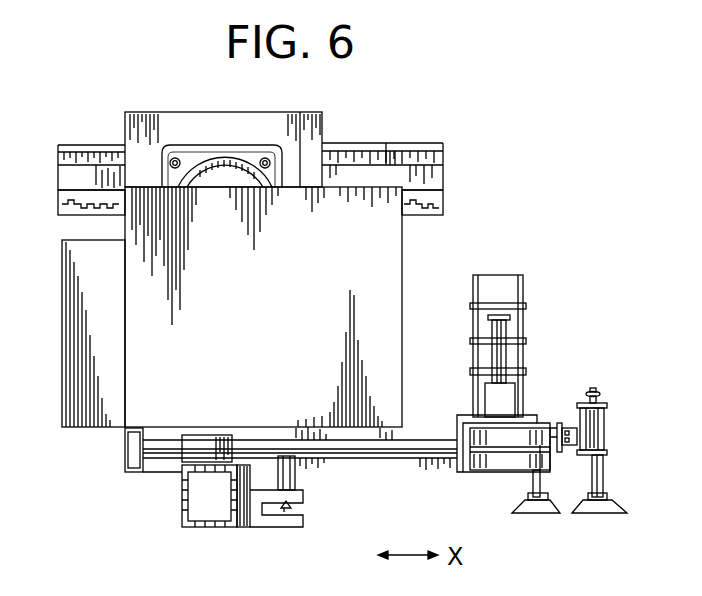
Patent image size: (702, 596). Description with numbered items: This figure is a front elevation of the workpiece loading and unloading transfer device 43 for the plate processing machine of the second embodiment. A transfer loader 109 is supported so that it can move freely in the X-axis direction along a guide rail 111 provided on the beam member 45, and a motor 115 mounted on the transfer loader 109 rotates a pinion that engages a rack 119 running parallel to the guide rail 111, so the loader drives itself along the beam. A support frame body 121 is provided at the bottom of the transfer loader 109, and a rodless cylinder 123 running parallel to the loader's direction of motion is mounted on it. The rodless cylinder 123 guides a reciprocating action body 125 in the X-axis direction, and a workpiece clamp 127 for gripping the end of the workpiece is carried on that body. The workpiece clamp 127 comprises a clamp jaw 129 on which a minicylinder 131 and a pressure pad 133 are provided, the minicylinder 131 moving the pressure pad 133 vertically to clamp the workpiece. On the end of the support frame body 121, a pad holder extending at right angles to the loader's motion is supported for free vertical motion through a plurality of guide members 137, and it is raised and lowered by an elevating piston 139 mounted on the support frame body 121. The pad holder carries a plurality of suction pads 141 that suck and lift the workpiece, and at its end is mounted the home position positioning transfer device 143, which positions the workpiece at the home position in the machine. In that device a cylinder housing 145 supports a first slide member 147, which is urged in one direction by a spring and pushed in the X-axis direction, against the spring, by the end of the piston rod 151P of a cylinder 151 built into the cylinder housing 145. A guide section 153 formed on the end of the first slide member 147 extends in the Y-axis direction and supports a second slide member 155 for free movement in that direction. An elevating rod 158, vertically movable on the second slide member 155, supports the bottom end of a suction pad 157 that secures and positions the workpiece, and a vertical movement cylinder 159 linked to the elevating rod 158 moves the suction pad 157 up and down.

The workpiece loading and unloading transfer device 43 is at (65, 452).
The beam member 45 is at (387, 168).
The transfer loader 109 is at (277, 321).
The guide rail 111 is at (444, 153).
The motor 115 is at (210, 185).
The rack 119 is at (444, 196).
The support frame body 121 is at (122, 455).
The rodless cylinder 123 is at (428, 440).
The reciprocating action body 125 is at (185, 458).
The workpiece clamp 127 is at (237, 530).
The clamp jaw 129 is at (252, 528).
The minicylinder 131 is at (298, 483).
The pressure pad 133 is at (292, 507).
The guide members 137 is at (512, 320).
The elevating piston 139 is at (497, 278).
The suction pads 141 is at (527, 512).
The home position positioning transfer device 143 is at (612, 397).
The cylinder housing 145 is at (496, 466).
The first slide member 147 is at (557, 430).
The cylinder 151 is at (475, 470).
The piston rod 151P is at (540, 447).
The guide section 153 is at (565, 423).
The second slide member 155 is at (587, 402).
The suction pad 157 is at (606, 512).
The elevating rod 158 is at (603, 462).
The vertical movement cylinder 159 is at (606, 422).